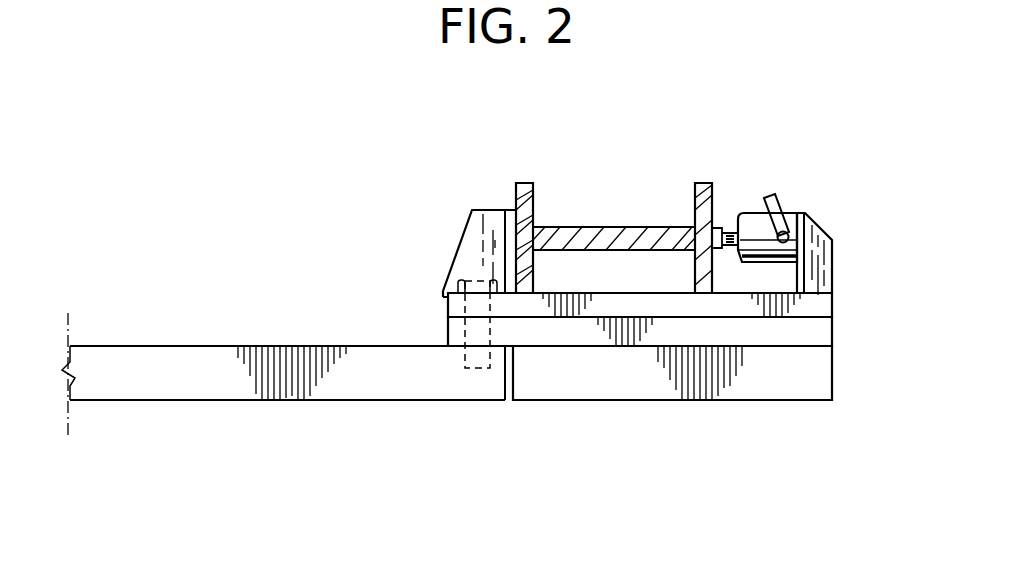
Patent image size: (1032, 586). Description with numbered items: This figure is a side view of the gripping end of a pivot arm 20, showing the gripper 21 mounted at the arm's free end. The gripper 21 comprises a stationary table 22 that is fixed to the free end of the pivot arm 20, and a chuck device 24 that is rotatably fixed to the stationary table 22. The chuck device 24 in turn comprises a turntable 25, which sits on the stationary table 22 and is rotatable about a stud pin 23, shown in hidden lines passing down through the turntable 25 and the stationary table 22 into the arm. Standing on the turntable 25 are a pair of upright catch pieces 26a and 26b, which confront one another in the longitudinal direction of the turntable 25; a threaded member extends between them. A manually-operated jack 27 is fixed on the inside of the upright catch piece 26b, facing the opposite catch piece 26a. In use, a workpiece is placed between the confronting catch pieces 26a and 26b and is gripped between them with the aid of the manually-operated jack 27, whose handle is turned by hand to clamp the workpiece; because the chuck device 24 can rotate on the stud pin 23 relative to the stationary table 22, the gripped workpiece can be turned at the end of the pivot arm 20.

The pivot arm 20 is at (212, 357).
The gripper 21 is at (798, 193).
The stationary table 22 is at (653, 333).
The stud pin 23 is at (478, 336).
The chuck device 24 is at (833, 278).
The turntable 25 is at (733, 305).
The upright catch piece 26a is at (512, 235).
The upright catch piece 26b is at (822, 232).
The manually-operated jack 27 is at (757, 221).